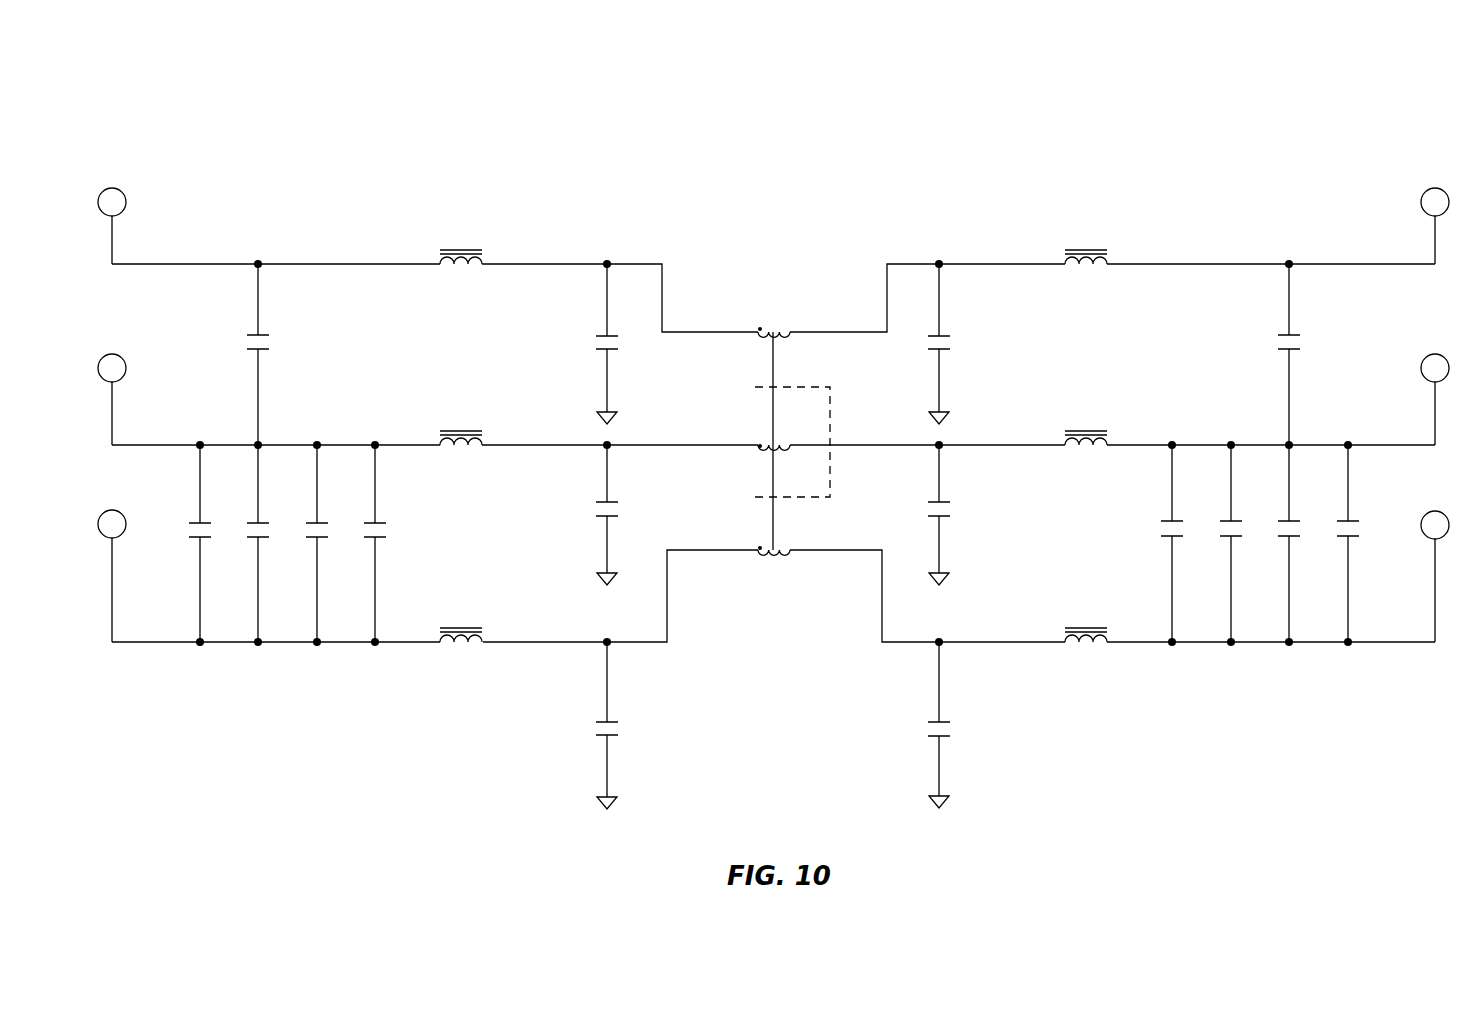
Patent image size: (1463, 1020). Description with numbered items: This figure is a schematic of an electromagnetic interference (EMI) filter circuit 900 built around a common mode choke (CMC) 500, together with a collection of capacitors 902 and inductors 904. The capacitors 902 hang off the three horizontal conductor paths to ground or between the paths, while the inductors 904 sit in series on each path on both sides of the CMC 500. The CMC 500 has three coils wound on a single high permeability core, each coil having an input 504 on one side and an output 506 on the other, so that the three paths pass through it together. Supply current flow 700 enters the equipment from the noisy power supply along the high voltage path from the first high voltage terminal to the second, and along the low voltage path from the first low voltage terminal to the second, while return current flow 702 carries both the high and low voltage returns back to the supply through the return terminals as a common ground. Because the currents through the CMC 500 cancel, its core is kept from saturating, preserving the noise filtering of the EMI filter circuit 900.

The electromagnetic interference (EMI) filter circuit 900 is at (1361, 160).
The common mode choke 500 is at (791, 375).
The input 504 is at (732, 331).
The output 506 is at (832, 426).
The supply current flow 700 is at (125, 226).
The return current flow 702 is at (120, 418).
The capacitors 902 is at (262, 336).
The inductors 904 is at (467, 276).